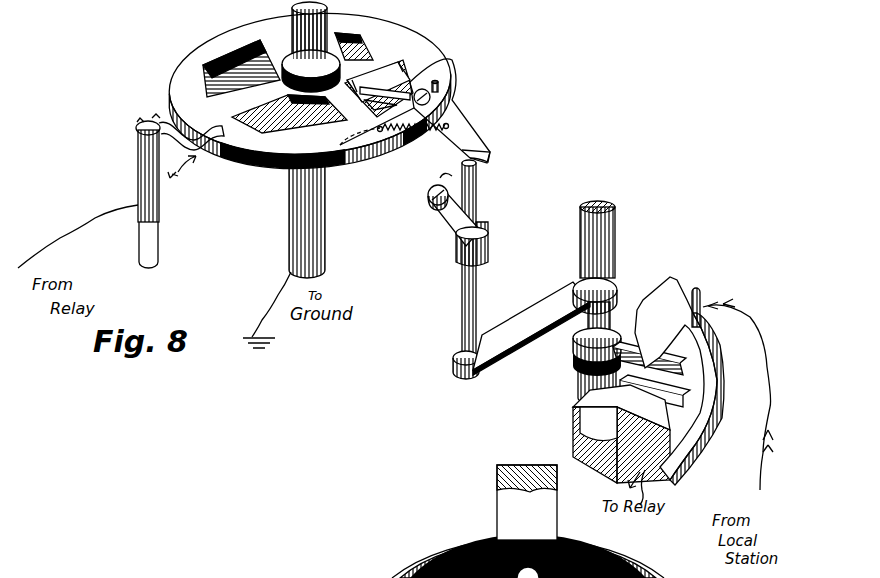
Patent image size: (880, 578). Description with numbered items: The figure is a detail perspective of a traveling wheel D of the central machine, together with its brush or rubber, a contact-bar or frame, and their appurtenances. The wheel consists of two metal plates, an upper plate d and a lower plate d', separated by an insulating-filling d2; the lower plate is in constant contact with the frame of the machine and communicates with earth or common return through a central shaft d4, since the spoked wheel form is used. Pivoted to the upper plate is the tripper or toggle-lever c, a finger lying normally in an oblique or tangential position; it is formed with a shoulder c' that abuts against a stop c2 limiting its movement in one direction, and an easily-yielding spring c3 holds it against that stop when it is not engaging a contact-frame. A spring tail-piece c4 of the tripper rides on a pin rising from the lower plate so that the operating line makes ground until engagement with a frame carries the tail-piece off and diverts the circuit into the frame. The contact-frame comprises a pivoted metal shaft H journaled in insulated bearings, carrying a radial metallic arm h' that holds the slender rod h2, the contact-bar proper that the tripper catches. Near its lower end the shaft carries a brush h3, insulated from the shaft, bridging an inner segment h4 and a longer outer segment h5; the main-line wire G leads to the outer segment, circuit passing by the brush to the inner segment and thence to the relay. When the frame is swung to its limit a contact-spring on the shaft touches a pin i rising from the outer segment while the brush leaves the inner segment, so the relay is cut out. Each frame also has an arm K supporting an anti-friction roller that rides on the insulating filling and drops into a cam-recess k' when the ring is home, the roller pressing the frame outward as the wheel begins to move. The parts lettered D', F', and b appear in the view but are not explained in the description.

The contact wheel D is at (414, 291).
The upper plate d is at (311, 302).
The lower plate d' is at (314, 147).
The insulating-filling d2 is at (166, 124).
The central shaft d4 is at (320, 140).
The brush rod F' is at (174, 199).
The tripper or toggle-lever c is at (415, 111).
The shoulder c' is at (445, 72).
The stop c2 is at (440, 92).
The spring c3 is at (394, 127).
The spring tail-piece c4 is at (370, 82).
The cam-recess k' is at (422, 207).
The arm K is at (484, 207).
The vertical rod D' is at (485, 259).
The slender rod h2 is at (444, 340).
The radial metallic arm h' is at (556, 330).
The pivoted metal bar or shaft H is at (603, 315).
The metal arm or brush h3 is at (655, 390).
The inner segment h4 is at (649, 353).
The outer segment h5 is at (707, 352).
The pin i is at (699, 297).
The main-line wire G is at (744, 394).
The bar b is at (497, 492).